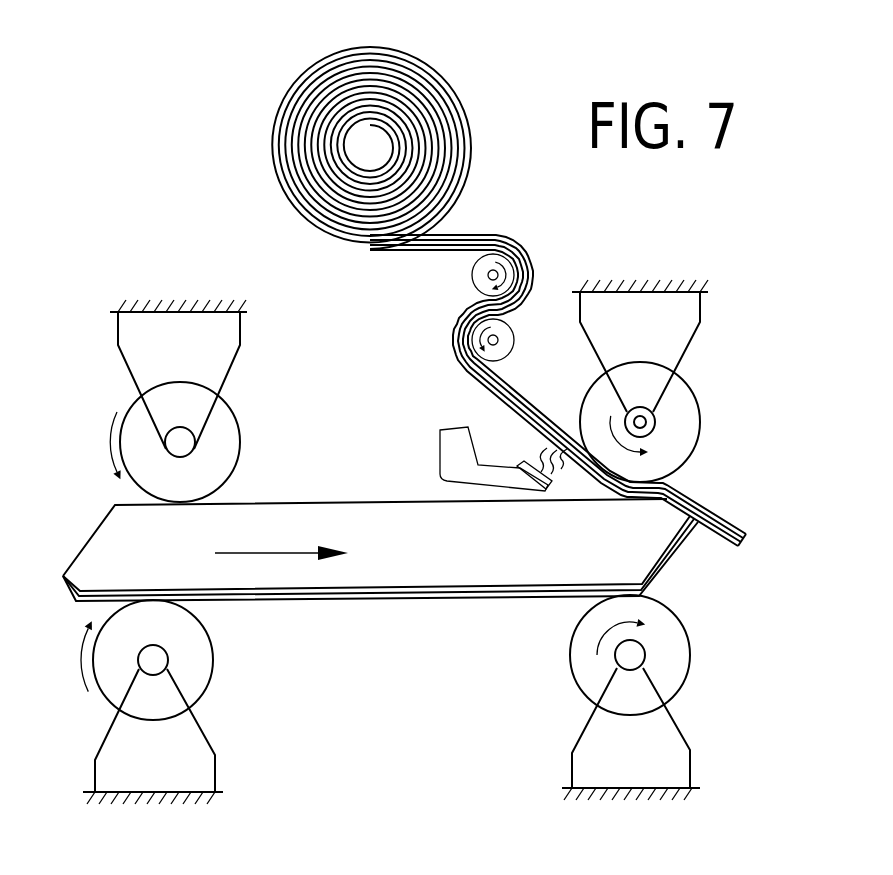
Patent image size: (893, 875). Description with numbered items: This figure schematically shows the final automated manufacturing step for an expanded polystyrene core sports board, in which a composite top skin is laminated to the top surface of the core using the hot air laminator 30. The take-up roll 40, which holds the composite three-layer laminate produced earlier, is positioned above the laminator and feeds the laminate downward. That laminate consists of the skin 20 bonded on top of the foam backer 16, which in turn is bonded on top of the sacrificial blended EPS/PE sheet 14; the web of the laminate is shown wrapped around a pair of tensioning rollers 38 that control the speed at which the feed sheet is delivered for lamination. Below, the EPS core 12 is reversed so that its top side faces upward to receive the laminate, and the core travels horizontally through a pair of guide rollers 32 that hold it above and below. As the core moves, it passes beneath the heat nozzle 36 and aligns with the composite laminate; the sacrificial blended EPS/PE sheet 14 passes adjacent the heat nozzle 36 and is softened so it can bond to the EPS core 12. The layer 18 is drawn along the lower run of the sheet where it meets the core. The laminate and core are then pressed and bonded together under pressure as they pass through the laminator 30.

The hot air laminator 30 is at (97, 180).
The take-up roll 40 is at (420, 58).
The skin 20 is at (456, 236).
The foam backer 16 is at (530, 262).
The tensioning rollers 38 is at (470, 283).
The blended EPS/PE sheet 14 is at (455, 342).
The backing layer 18 is at (462, 598).
The EPS core 12 is at (552, 565).
The heat nozzle 36 is at (440, 454).
The guide rollers 32 is at (232, 446).